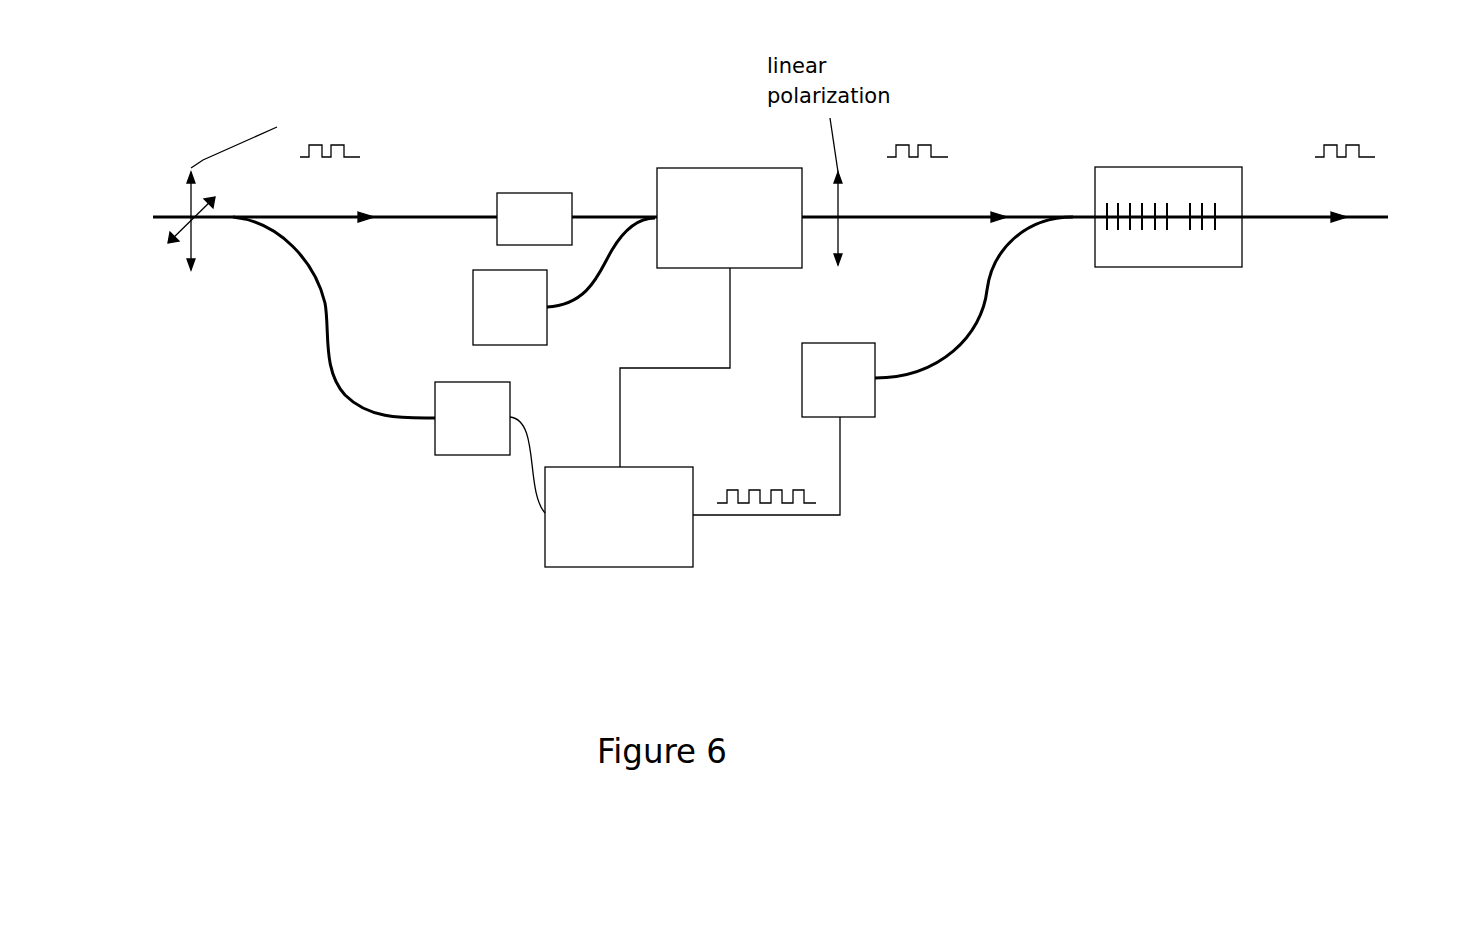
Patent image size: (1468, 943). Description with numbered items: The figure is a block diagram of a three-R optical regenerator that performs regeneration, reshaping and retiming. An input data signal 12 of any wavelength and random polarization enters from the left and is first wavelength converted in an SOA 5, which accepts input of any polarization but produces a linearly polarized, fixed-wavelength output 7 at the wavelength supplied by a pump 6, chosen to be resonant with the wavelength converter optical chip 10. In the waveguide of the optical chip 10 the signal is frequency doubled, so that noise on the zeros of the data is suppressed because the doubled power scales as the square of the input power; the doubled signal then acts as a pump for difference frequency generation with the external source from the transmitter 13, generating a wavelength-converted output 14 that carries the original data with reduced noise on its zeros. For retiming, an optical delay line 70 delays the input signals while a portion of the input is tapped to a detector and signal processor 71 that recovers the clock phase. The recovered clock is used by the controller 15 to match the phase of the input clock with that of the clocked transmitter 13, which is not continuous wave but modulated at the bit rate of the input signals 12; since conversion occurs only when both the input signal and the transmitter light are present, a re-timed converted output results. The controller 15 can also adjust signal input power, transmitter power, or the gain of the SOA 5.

The input data signal 12 is at (302, 167).
The optical delay line 70 is at (533, 193).
The SOA 5 is at (730, 168).
The fixed-wavelength output 7 is at (966, 148).
The optical chip 10 is at (1167, 167).
The wavelength-converted output 14 is at (1383, 140).
The pump 6 is at (473, 310).
The detector and signal processor 71 is at (470, 455).
The controller 15 is at (618, 567).
The transmitter (Tx) 13 is at (867, 385).